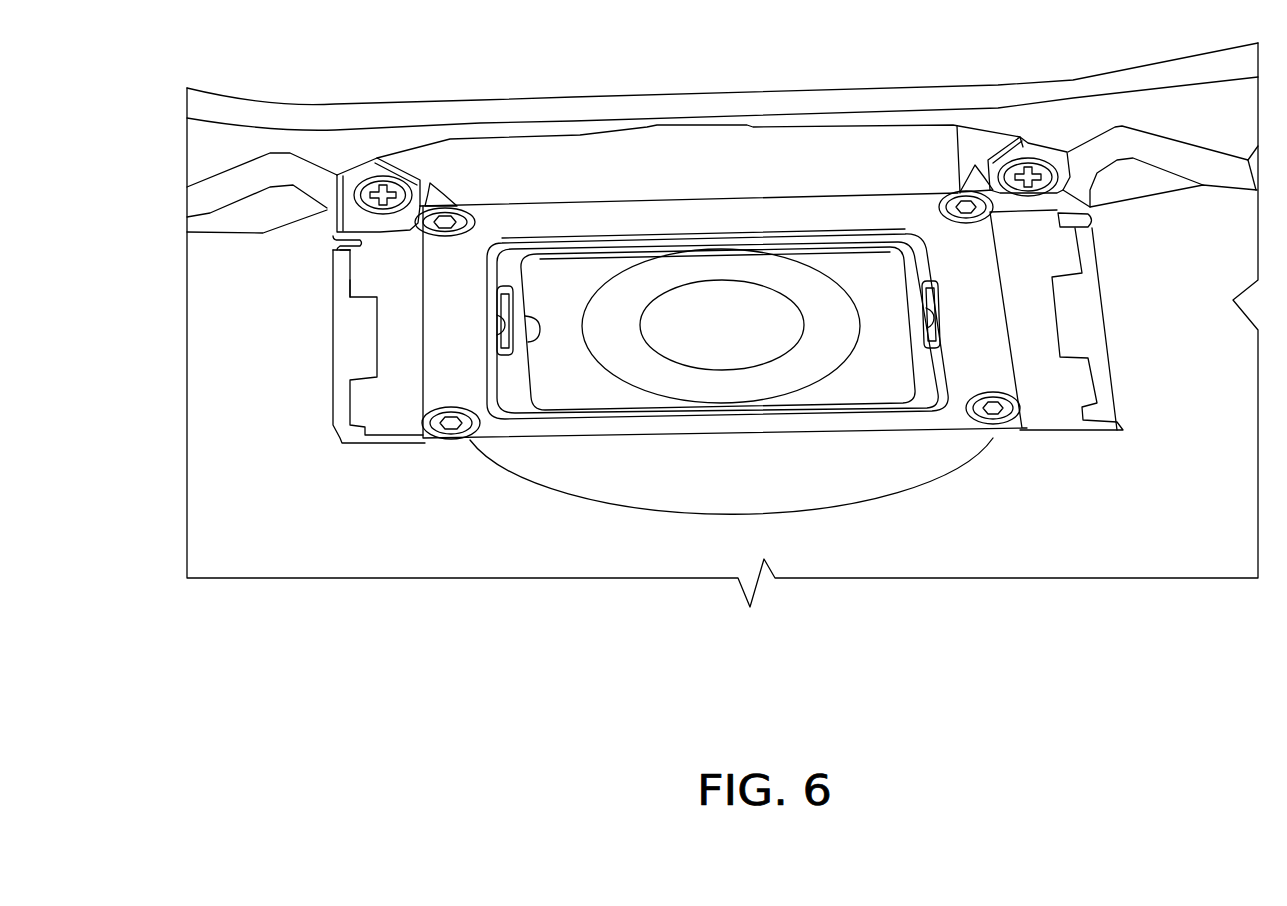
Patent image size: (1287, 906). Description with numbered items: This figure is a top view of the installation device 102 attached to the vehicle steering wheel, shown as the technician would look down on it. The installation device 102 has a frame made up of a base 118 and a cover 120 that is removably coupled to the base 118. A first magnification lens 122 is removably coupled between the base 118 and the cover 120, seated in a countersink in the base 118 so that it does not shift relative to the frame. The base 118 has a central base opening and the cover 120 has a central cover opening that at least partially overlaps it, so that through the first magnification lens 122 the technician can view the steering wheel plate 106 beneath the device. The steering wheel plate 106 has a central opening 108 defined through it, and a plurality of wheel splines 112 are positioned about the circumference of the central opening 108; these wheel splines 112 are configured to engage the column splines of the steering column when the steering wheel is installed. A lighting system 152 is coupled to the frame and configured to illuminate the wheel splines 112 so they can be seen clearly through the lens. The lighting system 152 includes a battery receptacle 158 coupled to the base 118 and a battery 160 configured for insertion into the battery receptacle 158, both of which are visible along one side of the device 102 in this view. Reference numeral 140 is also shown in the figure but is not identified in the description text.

The installation device 102 is at (470, 197).
The retaining clip 140 is at (509, 268).
The steering wheel plate 106 is at (565, 262).
The wheel splines 112 is at (658, 318).
The central opening 108 is at (771, 275).
The first magnification lens 122 is at (887, 287).
The base 118 is at (918, 270).
The cover 120 is at (927, 203).
The battery receptacle 158 is at (347, 272).
The battery 160 is at (347, 297).
The lighting system 152 is at (257, 334).